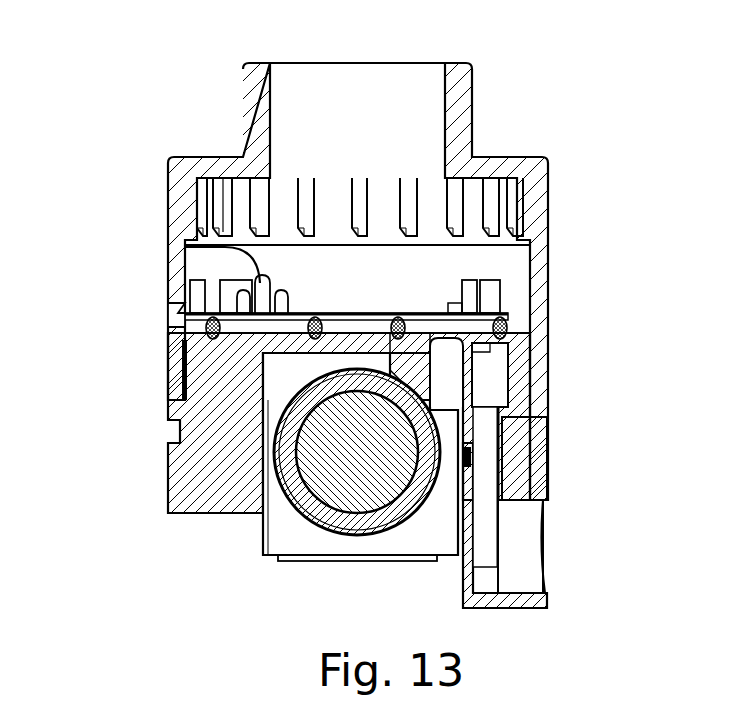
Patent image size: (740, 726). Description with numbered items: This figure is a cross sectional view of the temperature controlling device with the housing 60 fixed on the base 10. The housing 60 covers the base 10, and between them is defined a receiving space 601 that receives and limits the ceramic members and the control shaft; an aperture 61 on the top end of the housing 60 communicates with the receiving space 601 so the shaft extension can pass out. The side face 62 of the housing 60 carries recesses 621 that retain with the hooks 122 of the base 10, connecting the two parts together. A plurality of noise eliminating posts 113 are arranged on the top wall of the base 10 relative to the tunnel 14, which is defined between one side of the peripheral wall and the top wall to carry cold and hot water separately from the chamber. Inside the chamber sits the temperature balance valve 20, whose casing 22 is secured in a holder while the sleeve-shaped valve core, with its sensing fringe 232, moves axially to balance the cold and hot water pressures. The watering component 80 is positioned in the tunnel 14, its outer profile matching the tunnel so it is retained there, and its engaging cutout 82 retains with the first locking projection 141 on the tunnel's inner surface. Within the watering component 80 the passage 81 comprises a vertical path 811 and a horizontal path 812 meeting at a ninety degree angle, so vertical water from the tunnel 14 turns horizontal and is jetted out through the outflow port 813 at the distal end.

The base 10 is at (168, 482).
The tunnel 14 is at (445, 360).
The first locking projection 141 is at (518, 455).
The temperature balance valve 20 is at (367, 568).
The casing 22 is at (378, 523).
The sensing fringe 232 is at (333, 487).
The housing 60 is at (478, 118).
The aperture 61 is at (407, 93).
The side face 62 is at (548, 290).
The receiving space 601 is at (482, 260).
The recess 621 is at (168, 312).
The noise eliminating post 113 is at (170, 250).
The hook 122 is at (170, 320).
The watering component 80 is at (508, 612).
The passage 81 is at (591, 510).
The vertical path 811 is at (487, 477).
The horizontal path 812 is at (517, 543).
The outflow port 813 is at (606, 556).
The engaging cutout 82 is at (468, 458).